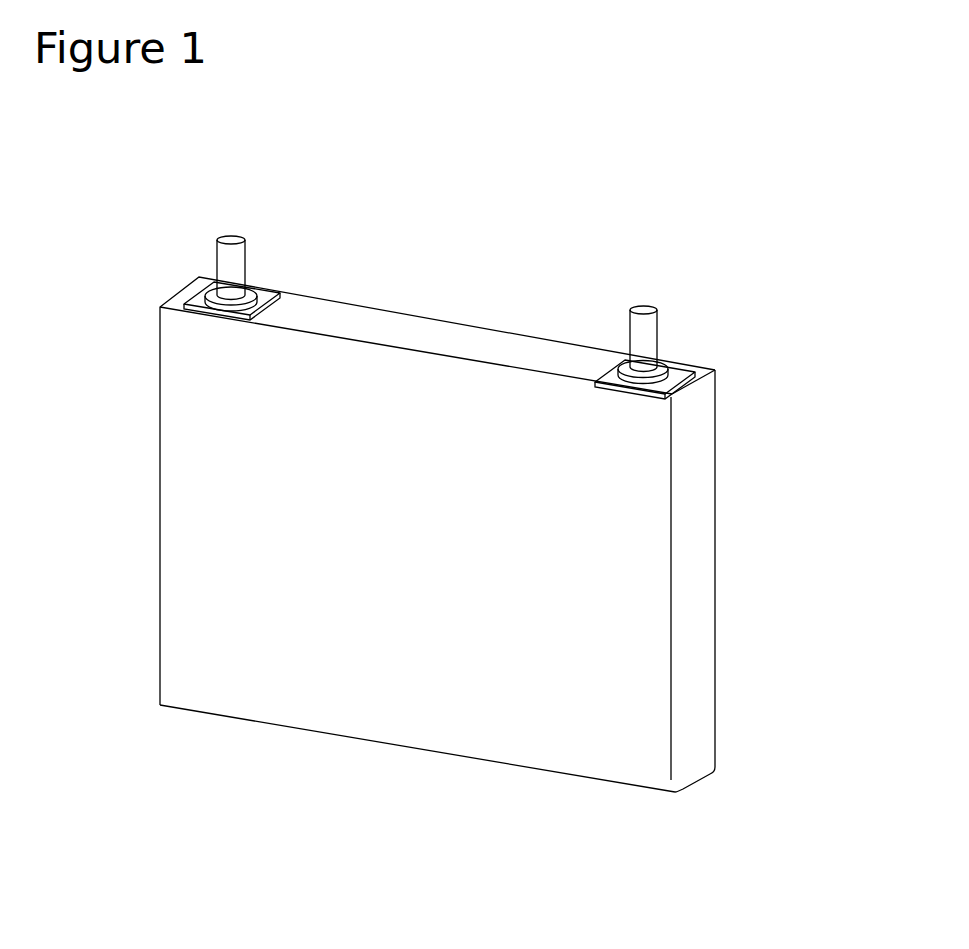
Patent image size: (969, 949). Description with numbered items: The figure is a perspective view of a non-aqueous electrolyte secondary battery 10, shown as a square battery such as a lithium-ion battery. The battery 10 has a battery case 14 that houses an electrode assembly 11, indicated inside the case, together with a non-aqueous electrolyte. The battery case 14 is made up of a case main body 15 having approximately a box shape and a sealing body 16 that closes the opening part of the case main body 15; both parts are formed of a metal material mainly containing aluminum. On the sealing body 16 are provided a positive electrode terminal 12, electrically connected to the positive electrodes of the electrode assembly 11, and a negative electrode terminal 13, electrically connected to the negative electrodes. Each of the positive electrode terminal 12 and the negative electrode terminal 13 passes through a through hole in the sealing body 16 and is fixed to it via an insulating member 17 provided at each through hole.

The non-aqueous electrolyte secondary battery 10 is at (744, 216).
The electrode assembly 11 is at (608, 577).
The positive electrode terminal 12 is at (236, 238).
The negative electrode terminal 13 is at (650, 307).
The battery case 14 is at (806, 403).
The case main body 15 is at (703, 505).
The sealing body 16 is at (716, 372).
The insulating member 17 is at (266, 292).